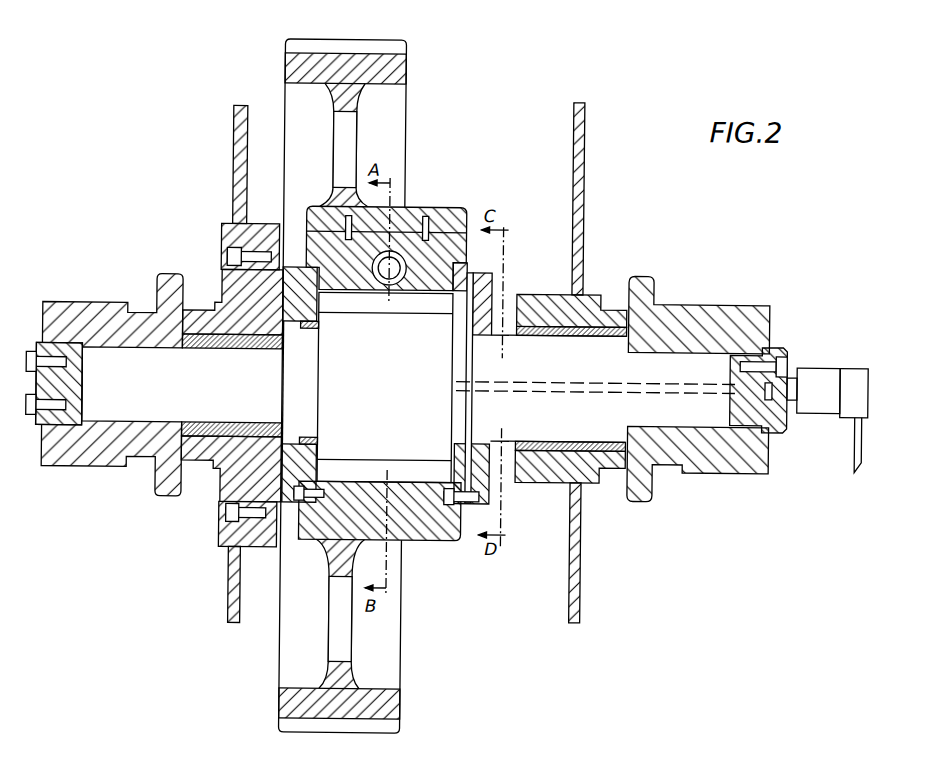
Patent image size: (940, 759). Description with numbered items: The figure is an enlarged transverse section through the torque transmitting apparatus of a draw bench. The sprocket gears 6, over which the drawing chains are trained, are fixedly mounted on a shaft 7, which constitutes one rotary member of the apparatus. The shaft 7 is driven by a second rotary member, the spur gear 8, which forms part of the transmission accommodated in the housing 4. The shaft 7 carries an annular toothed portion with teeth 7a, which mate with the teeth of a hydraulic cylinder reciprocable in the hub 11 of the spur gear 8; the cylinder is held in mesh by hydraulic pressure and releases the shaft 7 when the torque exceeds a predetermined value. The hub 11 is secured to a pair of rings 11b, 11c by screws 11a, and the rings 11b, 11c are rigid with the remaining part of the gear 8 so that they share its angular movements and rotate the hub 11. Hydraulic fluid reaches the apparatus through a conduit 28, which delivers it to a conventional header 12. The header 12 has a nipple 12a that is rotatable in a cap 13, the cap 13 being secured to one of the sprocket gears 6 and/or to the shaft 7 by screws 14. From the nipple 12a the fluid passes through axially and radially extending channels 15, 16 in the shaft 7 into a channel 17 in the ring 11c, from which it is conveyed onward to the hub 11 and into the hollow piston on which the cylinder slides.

The housing 4 is at (580, 146).
The sprocket gears 6 is at (162, 292).
The shaft 7 is at (252, 376).
The teeth 7a is at (412, 303).
The spur gear 8 is at (386, 157).
The hub 11 is at (409, 507).
The screws 11a is at (298, 504).
The ring 11b is at (276, 258).
The ring 11c is at (471, 499).
The header 12 is at (815, 398).
The nipple 12a is at (789, 368).
The cap 13 is at (780, 431).
The screws 14 is at (779, 348).
The channel 15 is at (697, 389).
The channel 16 is at (493, 484).
The channel 17 is at (467, 282).
The conduit 28 is at (857, 407).